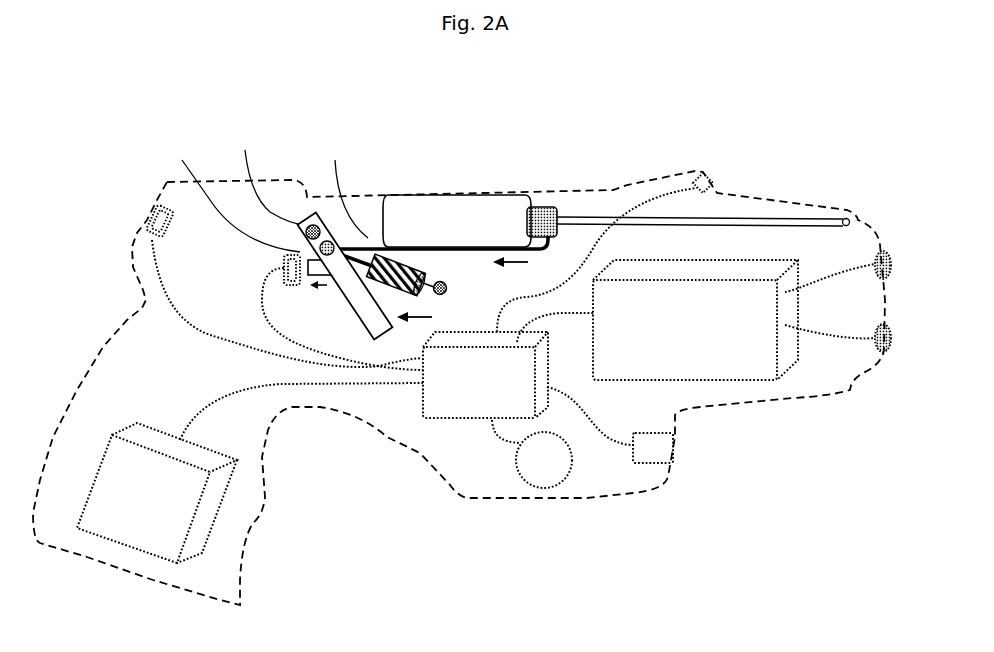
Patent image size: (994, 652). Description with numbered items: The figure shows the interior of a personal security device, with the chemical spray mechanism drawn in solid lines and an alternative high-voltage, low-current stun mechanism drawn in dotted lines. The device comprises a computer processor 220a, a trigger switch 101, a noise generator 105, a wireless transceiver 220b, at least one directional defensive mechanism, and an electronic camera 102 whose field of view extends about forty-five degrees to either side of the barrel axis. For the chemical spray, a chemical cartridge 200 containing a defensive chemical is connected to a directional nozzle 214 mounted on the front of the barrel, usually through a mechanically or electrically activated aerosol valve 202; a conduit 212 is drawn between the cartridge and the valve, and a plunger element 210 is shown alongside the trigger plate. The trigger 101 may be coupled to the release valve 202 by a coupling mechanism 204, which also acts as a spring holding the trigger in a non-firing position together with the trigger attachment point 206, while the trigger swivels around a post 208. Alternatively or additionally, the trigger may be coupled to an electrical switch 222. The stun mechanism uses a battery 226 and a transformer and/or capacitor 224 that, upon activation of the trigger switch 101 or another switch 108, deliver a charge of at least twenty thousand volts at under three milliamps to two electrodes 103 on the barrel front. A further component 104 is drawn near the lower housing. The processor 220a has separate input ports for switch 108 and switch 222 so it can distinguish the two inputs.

The trigger switch 101 is at (347, 322).
The electronic camera 102 is at (718, 183).
The electrodes 103 is at (898, 340).
The switch 104 is at (657, 462).
The noise generator 105 is at (517, 480).
The switch 108 is at (147, 225).
The chemical cartridge 200 is at (432, 193).
The aerosol valve 202 is at (545, 207).
The coupling mechanism 204 is at (343, 191).
The trigger attachment point 206 is at (224, 192).
The post 208 is at (266, 176).
The piston / plunger 210 is at (413, 258).
The conduit 212 is at (601, 209).
The directional nozzle 214 is at (857, 213).
The computer processor 220a is at (485, 375).
The wireless transceiver 220b is at (485, 375).
The electrical switch 222 is at (273, 261).
The transformer and/or capacitor 224 is at (695, 320).
The battery 226 is at (157, 493).